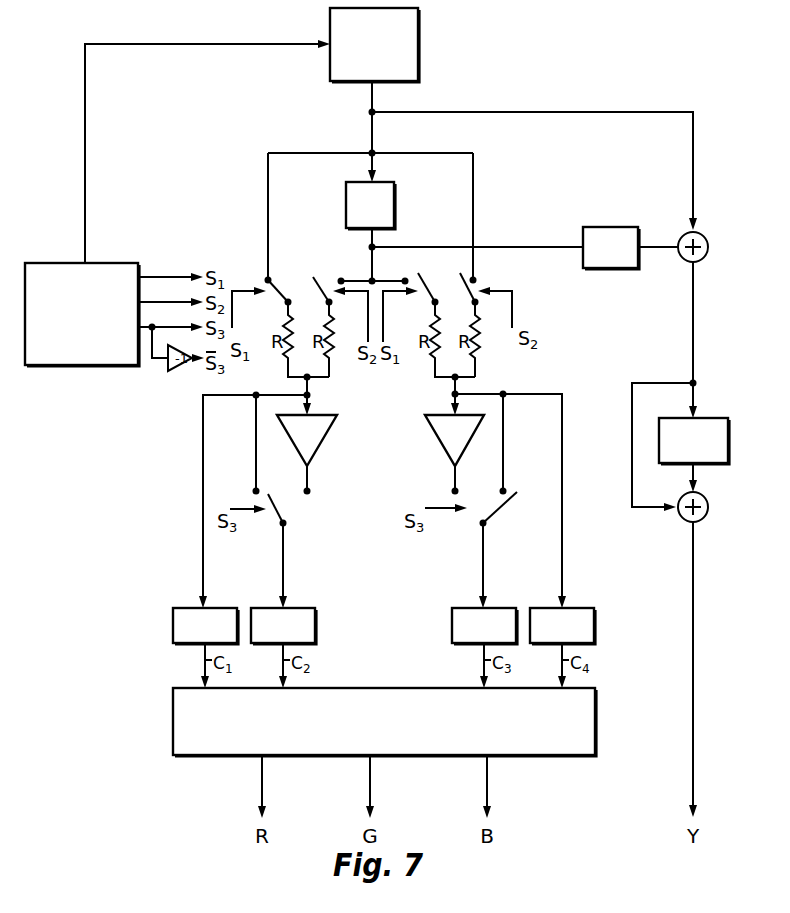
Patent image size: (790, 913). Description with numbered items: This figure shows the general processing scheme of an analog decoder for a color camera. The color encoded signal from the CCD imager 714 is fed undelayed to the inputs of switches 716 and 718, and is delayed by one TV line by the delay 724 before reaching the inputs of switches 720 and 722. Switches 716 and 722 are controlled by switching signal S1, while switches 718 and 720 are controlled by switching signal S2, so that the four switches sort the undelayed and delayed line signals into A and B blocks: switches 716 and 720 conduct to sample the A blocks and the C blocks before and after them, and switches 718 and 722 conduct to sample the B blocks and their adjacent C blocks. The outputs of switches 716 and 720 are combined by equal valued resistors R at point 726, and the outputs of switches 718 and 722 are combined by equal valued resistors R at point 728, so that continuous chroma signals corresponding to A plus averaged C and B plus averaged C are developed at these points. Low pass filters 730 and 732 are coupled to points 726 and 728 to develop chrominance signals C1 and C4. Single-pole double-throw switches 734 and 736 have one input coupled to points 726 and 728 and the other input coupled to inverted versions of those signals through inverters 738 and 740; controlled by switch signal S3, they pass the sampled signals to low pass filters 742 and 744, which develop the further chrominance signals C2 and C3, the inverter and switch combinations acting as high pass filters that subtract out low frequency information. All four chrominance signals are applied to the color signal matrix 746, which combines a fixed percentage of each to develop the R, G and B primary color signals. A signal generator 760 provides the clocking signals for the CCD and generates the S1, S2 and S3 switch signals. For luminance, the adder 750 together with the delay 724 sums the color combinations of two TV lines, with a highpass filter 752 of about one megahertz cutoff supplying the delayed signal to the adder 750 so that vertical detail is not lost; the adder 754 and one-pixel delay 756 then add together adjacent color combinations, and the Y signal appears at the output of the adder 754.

The CCD imager 714 is at (419, 68).
The switch 716 is at (266, 277).
The switch 718 is at (481, 285).
The switch 720 is at (330, 277).
The switch 722 is at (441, 273).
The delay 724 is at (394, 208).
The point 726 is at (310, 395).
The point 728 is at (452, 394).
The low pass filter 730 is at (173, 637).
The low pass filter 732 is at (595, 636).
The single-pole double-throw switch 734 is at (278, 505).
The single-pole double-throw switch 736 is at (497, 511).
The inverter 738 is at (322, 453).
The inverter 740 is at (441, 450).
The low pass filter 742 is at (316, 636).
The low pass filter 744 is at (452, 637).
The color signal matrix 746 is at (596, 748).
The adder 750 is at (700, 235).
The highpass filter 752 is at (612, 227).
The adder 754 is at (700, 495).
The one-pixel delay 756 is at (700, 418).
The signal generator 760 is at (100, 263).